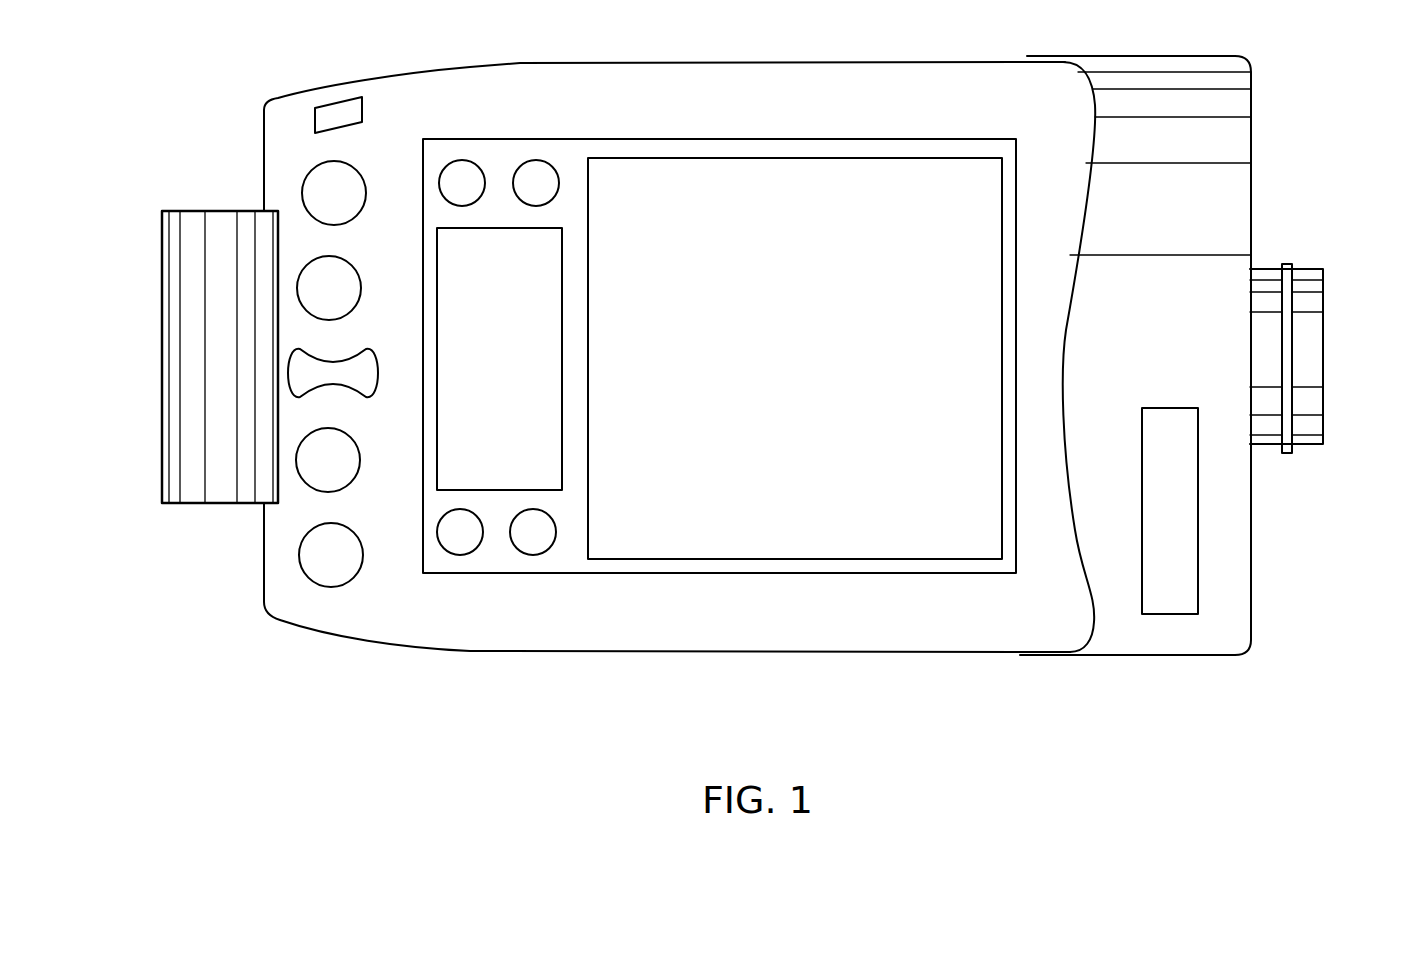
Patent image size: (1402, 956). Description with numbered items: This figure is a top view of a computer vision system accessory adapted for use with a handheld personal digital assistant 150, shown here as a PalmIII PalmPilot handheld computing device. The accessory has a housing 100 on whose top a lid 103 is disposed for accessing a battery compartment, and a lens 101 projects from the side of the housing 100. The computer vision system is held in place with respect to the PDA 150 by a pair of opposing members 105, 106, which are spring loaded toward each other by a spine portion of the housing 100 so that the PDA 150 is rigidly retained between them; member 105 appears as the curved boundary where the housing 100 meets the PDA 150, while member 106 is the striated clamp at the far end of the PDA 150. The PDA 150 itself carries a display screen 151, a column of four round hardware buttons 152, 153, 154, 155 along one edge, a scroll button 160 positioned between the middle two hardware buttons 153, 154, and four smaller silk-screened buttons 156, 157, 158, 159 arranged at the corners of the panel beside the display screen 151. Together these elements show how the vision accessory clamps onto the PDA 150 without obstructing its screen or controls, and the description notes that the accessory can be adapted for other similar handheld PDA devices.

The housing 100 is at (1172, 56).
The lens 101 is at (1325, 372).
The lid 103 is at (1162, 614).
The opposing member 105 is at (1064, 330).
The opposing member 106 is at (160, 372).
The personal digital assistant 150 is at (727, 62).
The display screen 151 is at (790, 158).
The hardware button 152 is at (302, 190).
The hardware button 153 is at (300, 292).
The hardware button 154 is at (298, 468).
The hardware button 155 is at (301, 562).
The silk-screened button 156 is at (472, 160).
The silk-screened button 157 is at (546, 160).
The silk-screened button 158 is at (452, 556).
The silk-screened button 159 is at (525, 556).
The scroll button 160 is at (378, 370).